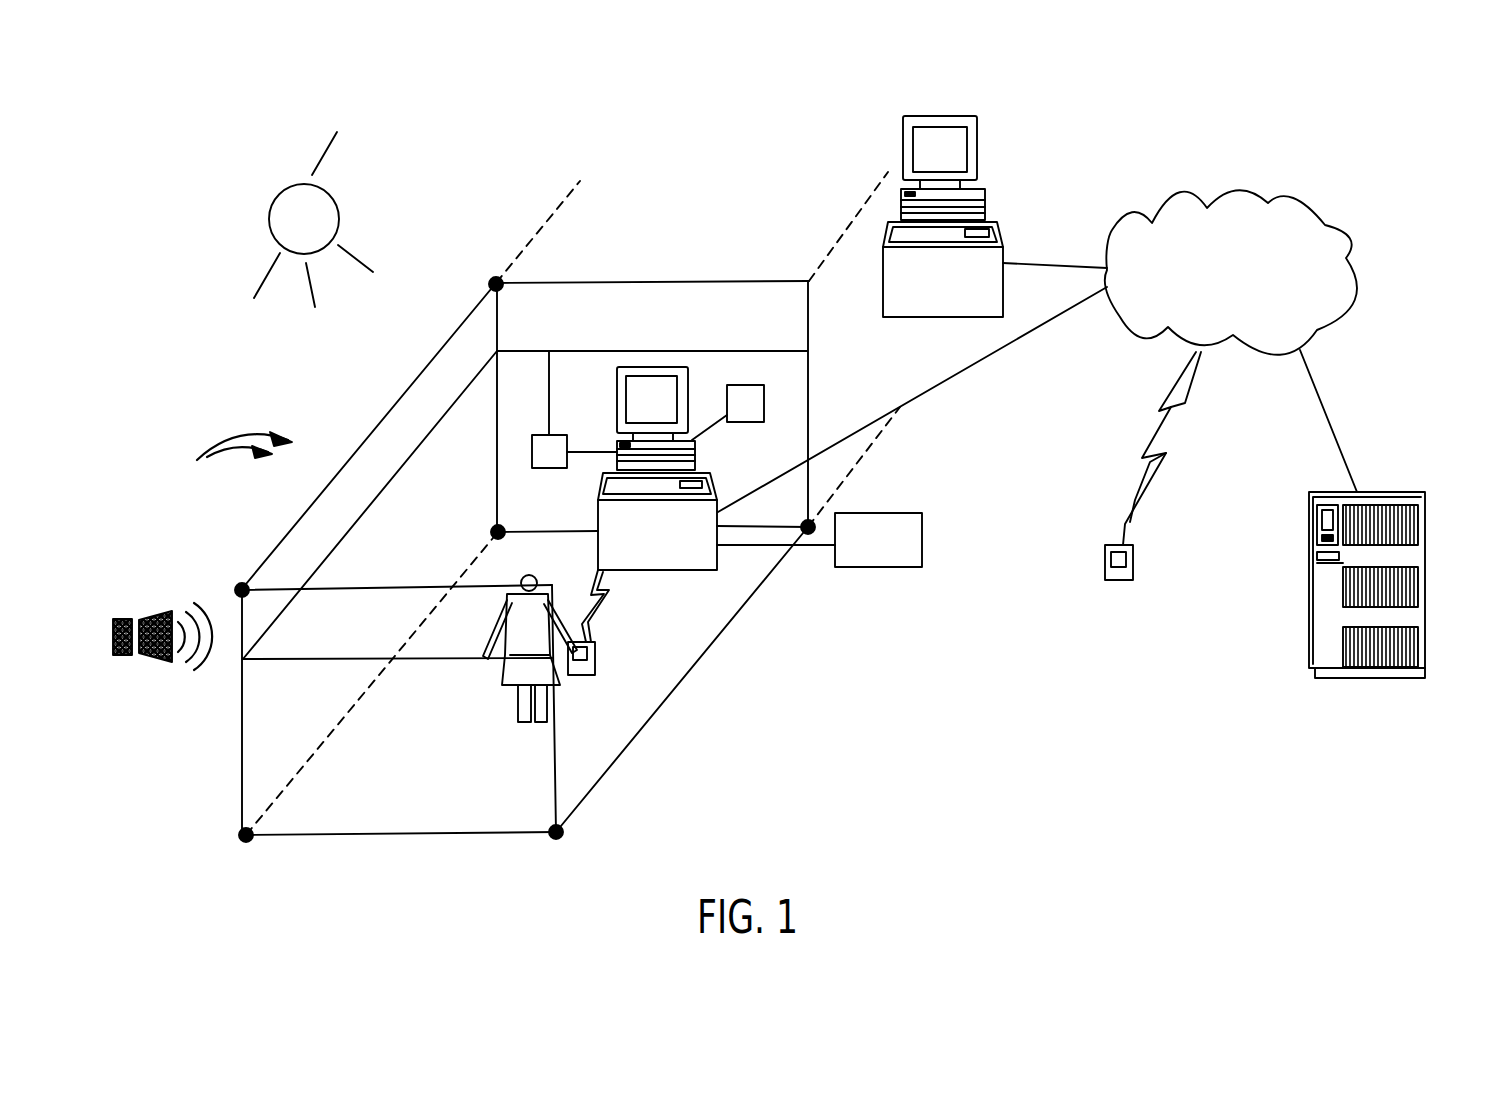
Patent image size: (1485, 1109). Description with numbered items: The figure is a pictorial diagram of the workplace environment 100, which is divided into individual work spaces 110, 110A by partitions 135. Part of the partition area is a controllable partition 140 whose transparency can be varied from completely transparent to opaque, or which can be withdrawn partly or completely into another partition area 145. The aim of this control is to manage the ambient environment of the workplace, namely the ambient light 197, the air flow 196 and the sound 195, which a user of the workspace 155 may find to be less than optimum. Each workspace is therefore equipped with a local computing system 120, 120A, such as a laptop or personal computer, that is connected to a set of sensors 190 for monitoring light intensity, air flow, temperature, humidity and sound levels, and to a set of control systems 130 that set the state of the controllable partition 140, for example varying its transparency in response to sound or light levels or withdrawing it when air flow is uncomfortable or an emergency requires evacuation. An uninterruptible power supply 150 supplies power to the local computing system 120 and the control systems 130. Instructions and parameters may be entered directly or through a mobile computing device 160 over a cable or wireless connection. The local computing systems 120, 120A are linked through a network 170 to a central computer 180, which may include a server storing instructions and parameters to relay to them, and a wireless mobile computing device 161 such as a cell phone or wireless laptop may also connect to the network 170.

The workplace environment 100 is at (827, 702).
The work space 110 is at (682, 679).
The work space 110A is at (912, 399).
The local computing system 120 is at (657, 468).
The local computing system 120A is at (995, 216).
The control system 130 is at (574, 426).
The partition 135 is at (401, 703).
The controllable partition 140 is at (567, 415).
The partition area 145 is at (399, 710).
The uninterruptible power supply 150 is at (858, 567).
The user of the workspace 155 is at (521, 648).
The mobile computing device 160 is at (600, 622).
The wireless mobile computing device 161 is at (1122, 580).
The network 170 is at (1231, 272).
The central computer 180 is at (1425, 617).
The sensor 190 is at (728, 419).
The sound 195 is at (162, 663).
The air flow 196 is at (235, 421).
The ambient light 197 is at (323, 219).